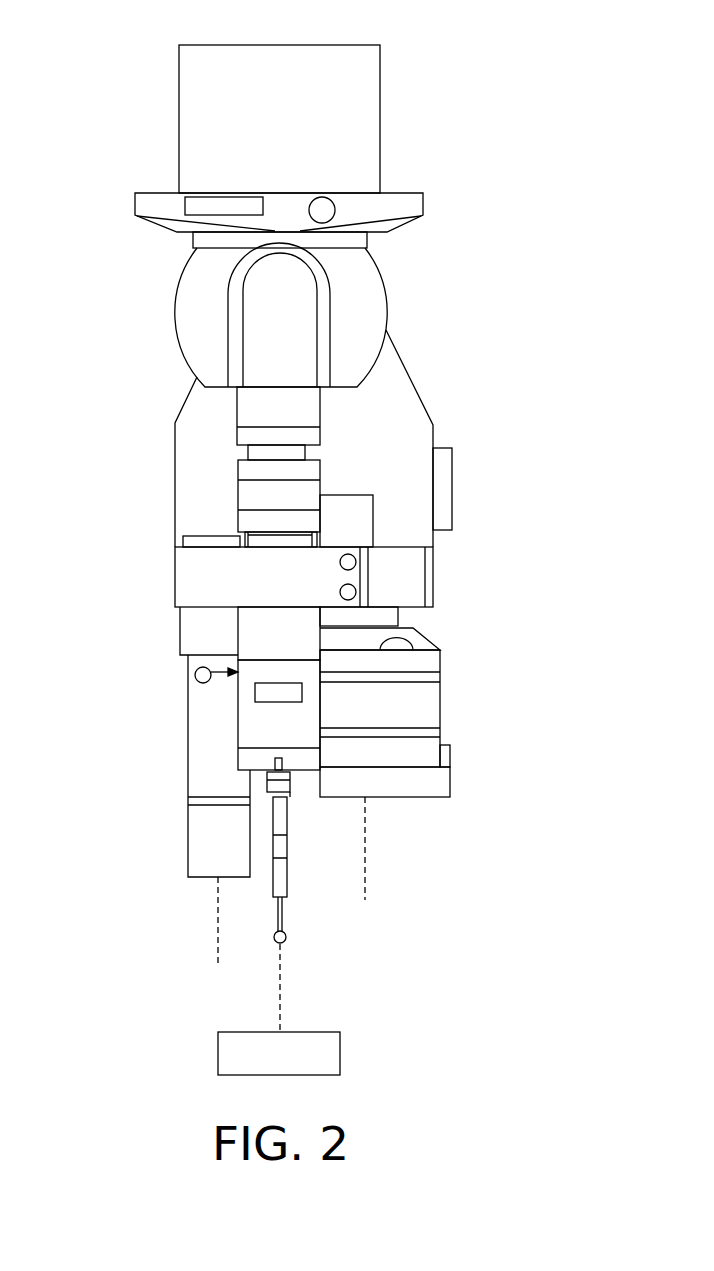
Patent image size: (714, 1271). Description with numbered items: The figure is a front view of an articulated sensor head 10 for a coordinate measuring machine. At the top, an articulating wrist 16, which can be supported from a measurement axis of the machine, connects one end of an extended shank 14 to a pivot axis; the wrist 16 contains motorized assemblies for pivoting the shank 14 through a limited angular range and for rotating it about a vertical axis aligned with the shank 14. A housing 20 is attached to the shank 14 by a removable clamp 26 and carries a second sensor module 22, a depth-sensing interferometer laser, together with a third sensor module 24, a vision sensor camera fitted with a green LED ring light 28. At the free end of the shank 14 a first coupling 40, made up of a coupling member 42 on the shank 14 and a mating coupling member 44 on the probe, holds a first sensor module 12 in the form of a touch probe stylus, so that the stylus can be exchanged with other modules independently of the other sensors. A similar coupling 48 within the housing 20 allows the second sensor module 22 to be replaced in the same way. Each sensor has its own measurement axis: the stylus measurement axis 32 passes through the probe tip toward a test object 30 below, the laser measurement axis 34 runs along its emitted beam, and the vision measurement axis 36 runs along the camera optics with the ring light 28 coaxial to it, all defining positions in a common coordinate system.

The articulated sensor head 10 is at (135, 160).
The first sensor module 12 is at (287, 889).
The extended shank 14 is at (238, 492).
The articulating wrist 16 is at (177, 301).
The housing 20 is at (414, 388).
The second sensor module 22 is at (188, 845).
The third sensor module 24 is at (440, 706).
The removable clamp 26 is at (175, 570).
The ring light 28 is at (450, 792).
The test object 30 is at (218, 1052).
The measurement axis 32 is at (282, 988).
The measurement axis 34 is at (218, 920).
The measurement axis 36 is at (365, 868).
The first coupling 40 is at (195, 673).
The coupling member 42 is at (252, 659).
The mating coupling member 44 is at (245, 684).
The coupling 48 is at (188, 805).